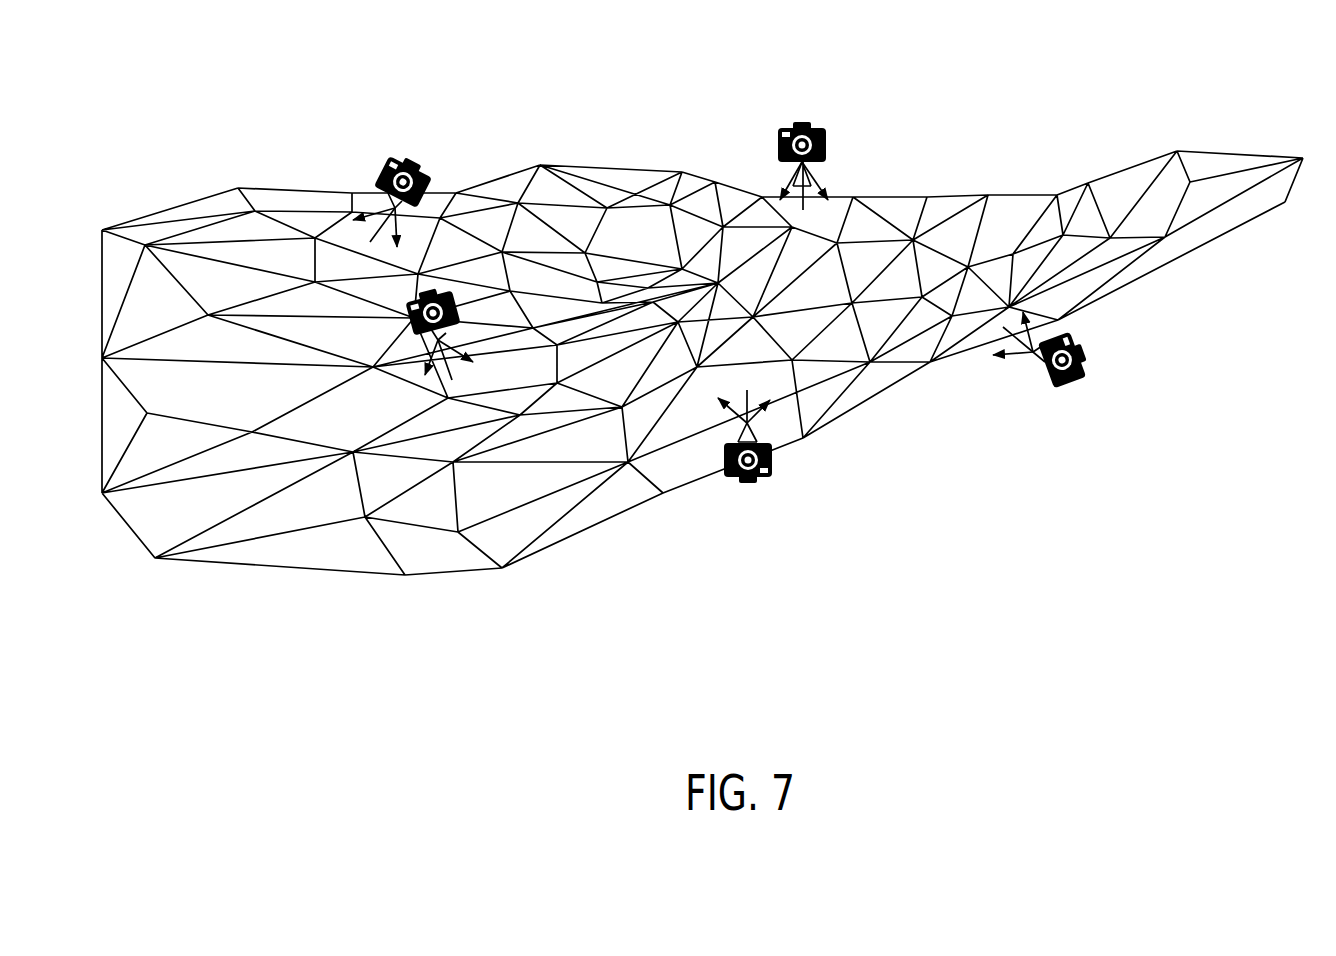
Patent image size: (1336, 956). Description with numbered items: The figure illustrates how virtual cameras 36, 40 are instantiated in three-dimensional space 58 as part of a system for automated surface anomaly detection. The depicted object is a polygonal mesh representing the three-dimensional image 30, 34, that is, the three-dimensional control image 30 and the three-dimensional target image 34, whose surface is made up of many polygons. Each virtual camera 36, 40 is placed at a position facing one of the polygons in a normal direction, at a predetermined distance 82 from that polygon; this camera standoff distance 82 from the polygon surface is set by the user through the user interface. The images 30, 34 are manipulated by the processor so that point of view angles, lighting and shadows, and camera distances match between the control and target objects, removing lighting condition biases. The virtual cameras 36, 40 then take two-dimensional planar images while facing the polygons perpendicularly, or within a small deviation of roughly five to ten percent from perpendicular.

The 3D control image 30 is at (702, 320).
The 3D target image 34 is at (654, 120).
The 3D space 58 is at (943, 82).
The predetermined distance 82 is at (804, 187).
The virtual camera 36 is at (1084, 383).
The virtual camera 40 is at (1090, 416).